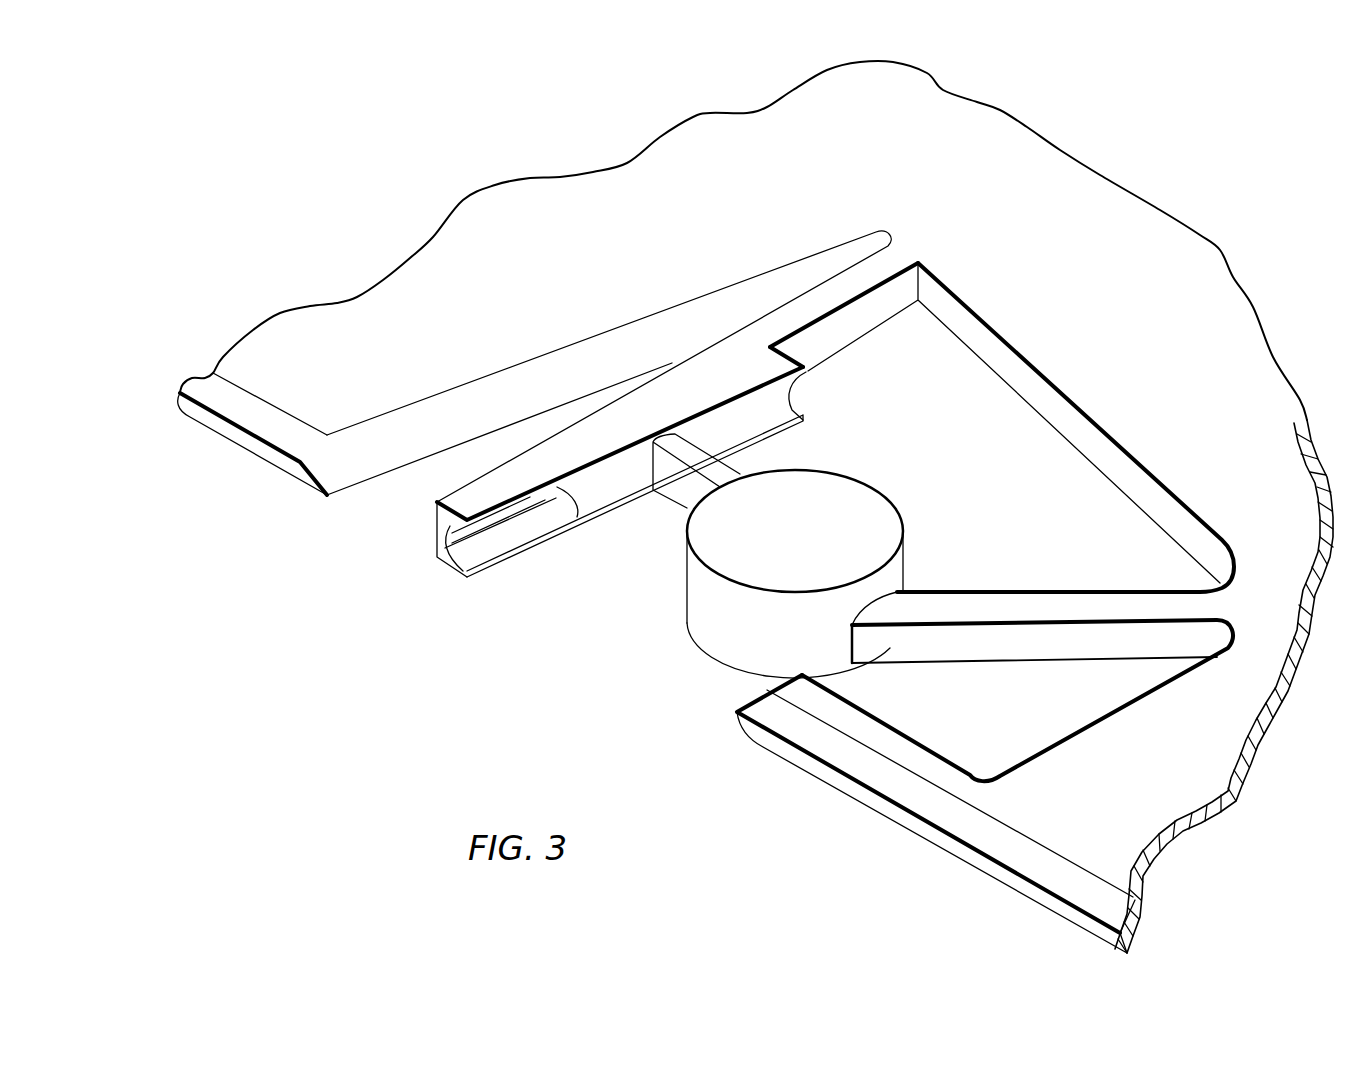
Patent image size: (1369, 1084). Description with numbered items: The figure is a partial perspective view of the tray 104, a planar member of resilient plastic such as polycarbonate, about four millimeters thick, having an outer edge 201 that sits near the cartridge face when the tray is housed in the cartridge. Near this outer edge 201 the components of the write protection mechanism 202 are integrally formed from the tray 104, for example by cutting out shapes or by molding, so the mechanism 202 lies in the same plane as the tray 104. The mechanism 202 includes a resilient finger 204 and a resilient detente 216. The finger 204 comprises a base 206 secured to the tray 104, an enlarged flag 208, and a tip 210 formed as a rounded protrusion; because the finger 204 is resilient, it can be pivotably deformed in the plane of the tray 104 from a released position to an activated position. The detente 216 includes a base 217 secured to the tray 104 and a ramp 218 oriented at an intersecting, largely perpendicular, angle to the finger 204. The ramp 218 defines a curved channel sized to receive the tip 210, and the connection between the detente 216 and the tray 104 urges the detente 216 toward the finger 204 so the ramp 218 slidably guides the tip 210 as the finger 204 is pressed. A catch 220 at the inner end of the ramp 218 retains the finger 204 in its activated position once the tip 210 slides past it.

The tray 104 is at (867, 155).
The outer edge 201 is at (243, 456).
The write protection mechanism 202 is at (452, 705).
The resilient finger 204 is at (934, 512).
The base 206 is at (977, 647).
The enlarged flag 208 is at (707, 623).
The tip 210 is at (677, 490).
The resilient detente 216 is at (412, 530).
The base 217 is at (848, 285).
The ramp 218 is at (498, 535).
The catch 220 is at (808, 344).